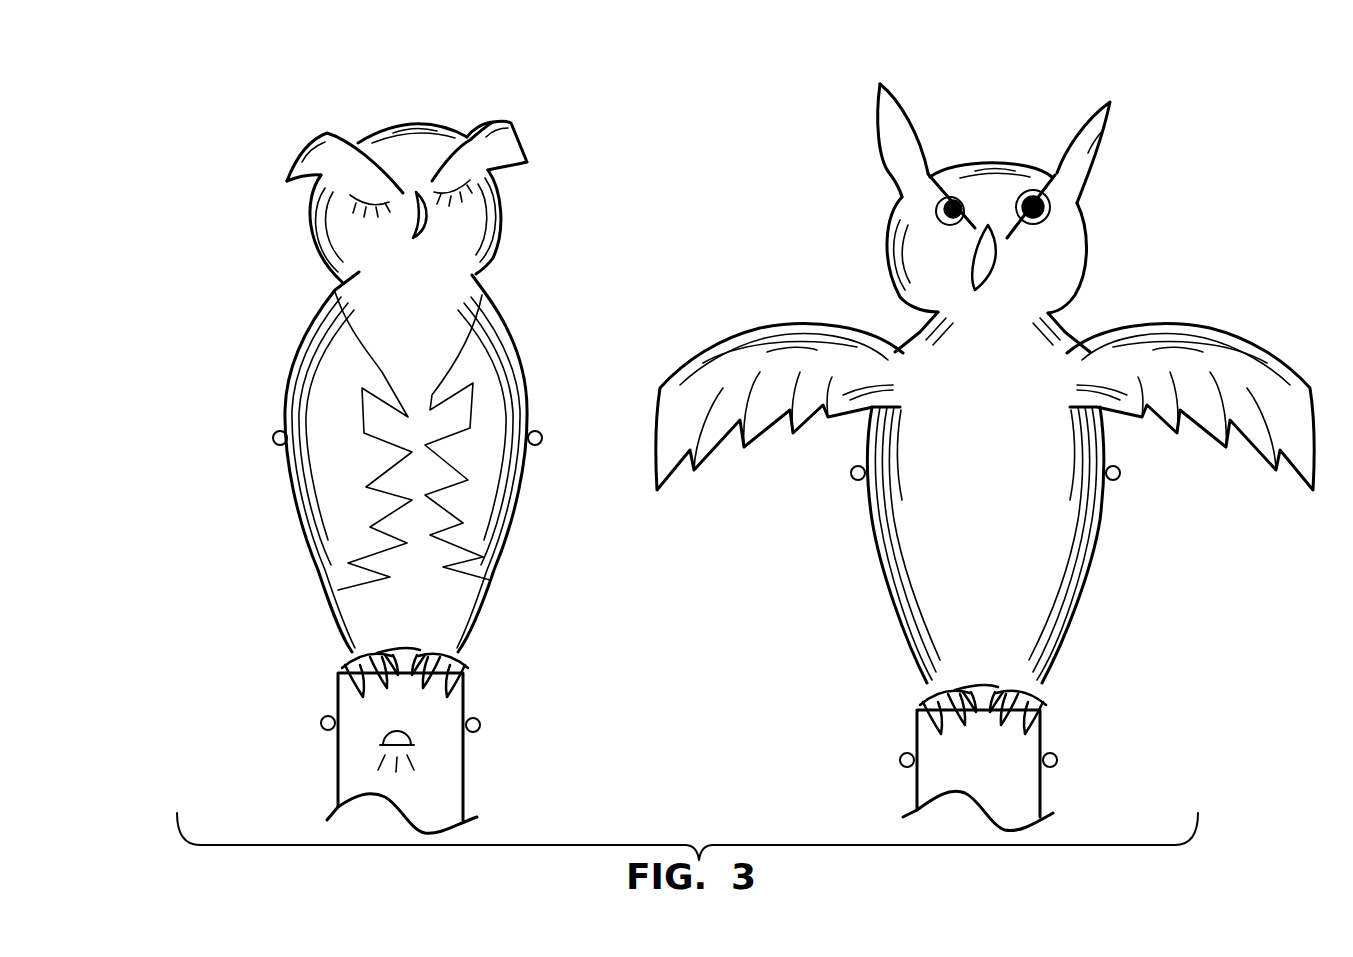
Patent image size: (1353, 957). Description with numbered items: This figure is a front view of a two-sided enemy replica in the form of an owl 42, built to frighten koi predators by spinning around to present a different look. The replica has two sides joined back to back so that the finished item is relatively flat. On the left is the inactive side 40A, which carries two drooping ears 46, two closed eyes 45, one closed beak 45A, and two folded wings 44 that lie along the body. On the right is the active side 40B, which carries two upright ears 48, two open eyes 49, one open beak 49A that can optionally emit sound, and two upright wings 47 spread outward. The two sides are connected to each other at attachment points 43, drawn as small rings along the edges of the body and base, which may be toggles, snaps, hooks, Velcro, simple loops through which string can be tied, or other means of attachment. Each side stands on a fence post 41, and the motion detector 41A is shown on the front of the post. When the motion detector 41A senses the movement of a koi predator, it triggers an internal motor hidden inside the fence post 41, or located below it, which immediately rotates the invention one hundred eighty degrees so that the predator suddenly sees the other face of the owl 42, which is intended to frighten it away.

The inactive side 40A is at (560, 108).
The active side 40B is at (1142, 92).
The fence post 41 is at (338, 797).
The motion detector 41A is at (405, 750).
The owl 42 is at (338, 603).
The attachment points 43 is at (278, 432).
The folded wings 44 is at (312, 360).
The closed eyes 45 is at (370, 200).
The closed beak 45A is at (422, 223).
The drooping ears 46 is at (332, 153).
The upright wings 47 is at (1242, 343).
The upright ears 48 is at (1090, 152).
The open eyes 49 is at (1045, 222).
The open beak 49A is at (1000, 258).